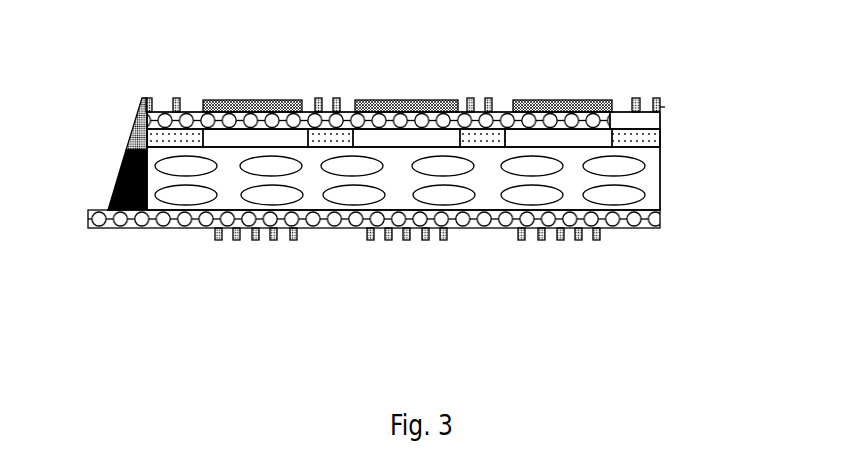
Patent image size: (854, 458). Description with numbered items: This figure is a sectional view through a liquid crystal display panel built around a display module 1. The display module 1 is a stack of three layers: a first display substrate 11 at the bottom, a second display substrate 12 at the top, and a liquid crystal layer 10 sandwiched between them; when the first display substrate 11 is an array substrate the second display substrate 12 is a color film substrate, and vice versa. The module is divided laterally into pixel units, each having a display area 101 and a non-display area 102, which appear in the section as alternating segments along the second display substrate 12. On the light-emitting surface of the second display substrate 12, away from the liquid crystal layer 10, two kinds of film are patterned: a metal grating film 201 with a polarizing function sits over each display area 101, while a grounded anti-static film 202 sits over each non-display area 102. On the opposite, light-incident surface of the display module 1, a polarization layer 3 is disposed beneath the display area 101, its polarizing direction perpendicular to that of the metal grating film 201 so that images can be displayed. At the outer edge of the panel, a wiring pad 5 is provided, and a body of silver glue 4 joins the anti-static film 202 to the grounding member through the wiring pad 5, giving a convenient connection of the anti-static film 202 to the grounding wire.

The display module 1 is at (777, 103).
The polarization layer 3 is at (595, 245).
The silver glue 4 is at (137, 148).
The wiring pad 5 is at (110, 203).
The liquid crystal layer 10 is at (638, 185).
The first display substrate 11 is at (658, 221).
The second display substrate 12 is at (658, 138).
The display area 101 is at (527, 138).
The non-display area 102 is at (477, 130).
The metal grating film 201 is at (547, 102).
The anti-static film 202 is at (635, 102).